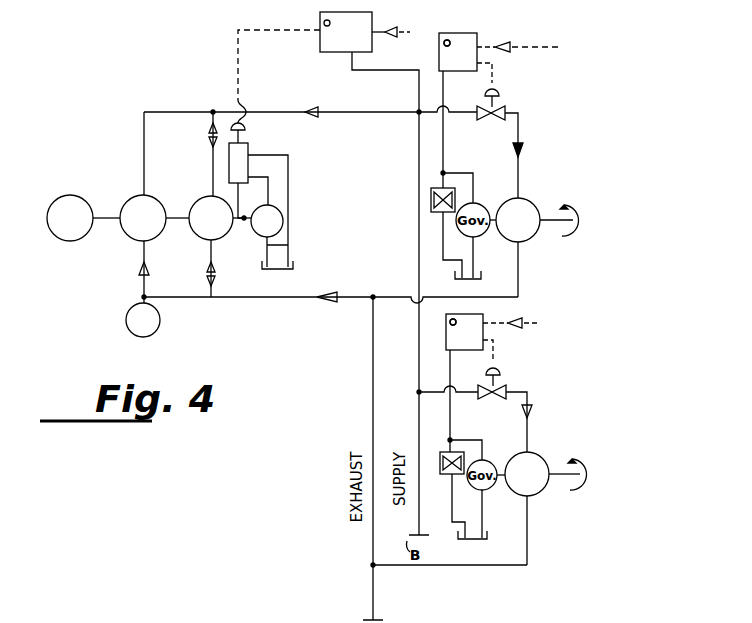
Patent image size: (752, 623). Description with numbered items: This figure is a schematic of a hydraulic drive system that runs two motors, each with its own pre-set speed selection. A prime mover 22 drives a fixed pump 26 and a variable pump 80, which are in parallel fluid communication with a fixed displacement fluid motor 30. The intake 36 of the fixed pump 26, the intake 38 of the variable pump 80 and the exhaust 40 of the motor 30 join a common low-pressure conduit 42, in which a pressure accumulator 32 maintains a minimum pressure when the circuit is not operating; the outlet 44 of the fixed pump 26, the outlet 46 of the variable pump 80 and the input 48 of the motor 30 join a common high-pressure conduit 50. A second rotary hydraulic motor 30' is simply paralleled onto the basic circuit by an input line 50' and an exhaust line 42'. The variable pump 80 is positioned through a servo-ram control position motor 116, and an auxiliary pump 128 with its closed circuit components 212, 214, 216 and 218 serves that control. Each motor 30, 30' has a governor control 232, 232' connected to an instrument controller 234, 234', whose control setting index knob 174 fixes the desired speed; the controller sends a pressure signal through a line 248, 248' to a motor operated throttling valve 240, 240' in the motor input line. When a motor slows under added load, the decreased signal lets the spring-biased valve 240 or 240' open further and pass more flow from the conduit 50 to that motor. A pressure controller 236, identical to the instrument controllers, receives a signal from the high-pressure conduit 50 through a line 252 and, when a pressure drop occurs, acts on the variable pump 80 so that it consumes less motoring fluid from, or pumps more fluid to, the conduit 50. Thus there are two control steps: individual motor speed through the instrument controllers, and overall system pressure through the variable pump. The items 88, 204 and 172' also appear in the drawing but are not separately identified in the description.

The prime mover 22 is at (62, 239).
The fixed pump 26 is at (160, 240).
The variable pump 80 is at (225, 239).
The pressure accumulator 32 is at (160, 322).
The intake of pump 26 36 is at (140, 284).
The intake of second pump 38 is at (205, 278).
The outlet of pump 26 44 is at (146, 148).
The outlet of second pump 46 is at (207, 156).
The common conduit 42 is at (331, 309).
The exhaust line 42' is at (450, 580).
The common conduit 50 is at (382, 252).
The input line 50' is at (448, 402).
The input of motor 30 48 is at (520, 168).
The fluid motor 30 is at (537, 210).
The second fluid motor 30' is at (546, 505).
The exhaust of motor 30 40 is at (520, 278).
The servo-ram control position motor 116 is at (246, 127).
The control valve 88 is at (244, 151).
The closed circuit component 214 is at (289, 161).
The closed circuit component 212 is at (288, 182).
The auxiliary pump 128 is at (283, 220).
The closed circuit component 216 is at (290, 241).
The closed circuit component 218 is at (274, 270).
The control signal line 204 is at (266, 32).
The pressure controller 236 is at (372, 22).
The line 252 is at (372, 76).
The control setting index knob 174 is at (448, 33).
The indicator (second system) 172' is at (435, 325).
The instrument controller 234 is at (499, 41).
The instrument controller 234' is at (491, 328).
The pressure signal line 248 is at (510, 73).
The pressure signal line 248' is at (516, 351).
The motor operated control valve 240 is at (512, 104).
The motor operated control valve 240' is at (513, 383).
The governor control 232 is at (469, 227).
The governor control 232' is at (478, 484).